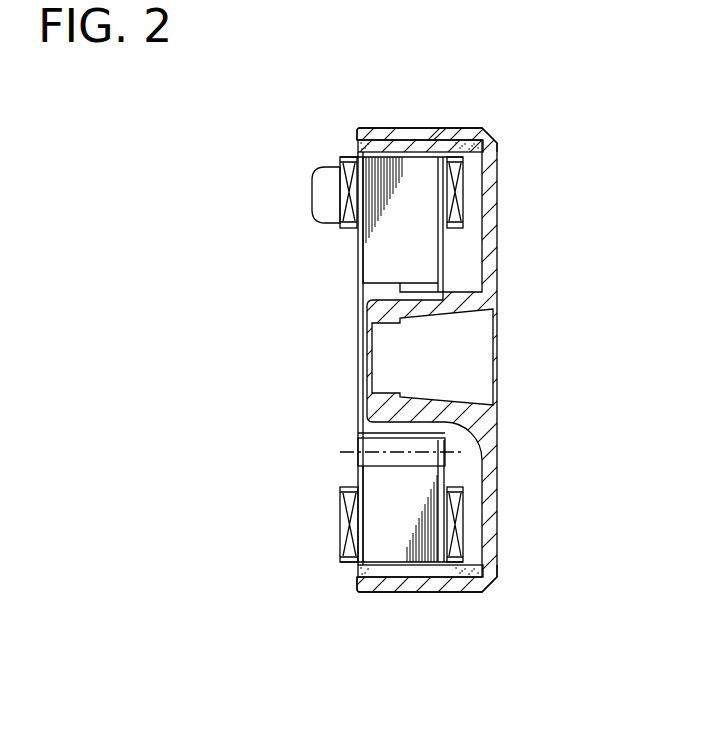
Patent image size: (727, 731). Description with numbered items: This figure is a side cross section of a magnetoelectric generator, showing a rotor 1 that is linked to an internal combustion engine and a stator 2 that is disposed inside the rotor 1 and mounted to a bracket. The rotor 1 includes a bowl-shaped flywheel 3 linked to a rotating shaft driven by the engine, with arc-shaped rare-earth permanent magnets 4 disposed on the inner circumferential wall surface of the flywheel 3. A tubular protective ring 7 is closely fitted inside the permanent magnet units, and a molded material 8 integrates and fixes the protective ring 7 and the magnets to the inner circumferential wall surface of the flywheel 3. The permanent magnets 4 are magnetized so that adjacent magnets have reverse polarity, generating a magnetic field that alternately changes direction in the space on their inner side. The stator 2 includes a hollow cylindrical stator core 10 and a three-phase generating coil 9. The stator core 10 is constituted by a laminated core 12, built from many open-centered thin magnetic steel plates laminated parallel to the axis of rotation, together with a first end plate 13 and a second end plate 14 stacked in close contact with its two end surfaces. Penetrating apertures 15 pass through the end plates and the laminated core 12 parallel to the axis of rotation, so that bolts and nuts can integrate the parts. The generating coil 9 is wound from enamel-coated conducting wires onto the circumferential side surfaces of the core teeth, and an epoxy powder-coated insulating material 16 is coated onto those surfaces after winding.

The rotor 1 is at (503, 205).
The stator 2 is at (345, 262).
The flywheel 3 is at (490, 136).
The permanent magnet 4 is at (403, 147).
The protective ring 7 is at (438, 150).
The molded material 8 is at (472, 580).
The generating coil 9 is at (342, 523).
The stator core 10 is at (397, 512).
The laminated core 12 is at (418, 255).
The first end plate 13 is at (348, 158).
The second end plate 14 is at (460, 160).
The penetrating aperture 15 is at (428, 446).
The insulating material 16 is at (340, 510).